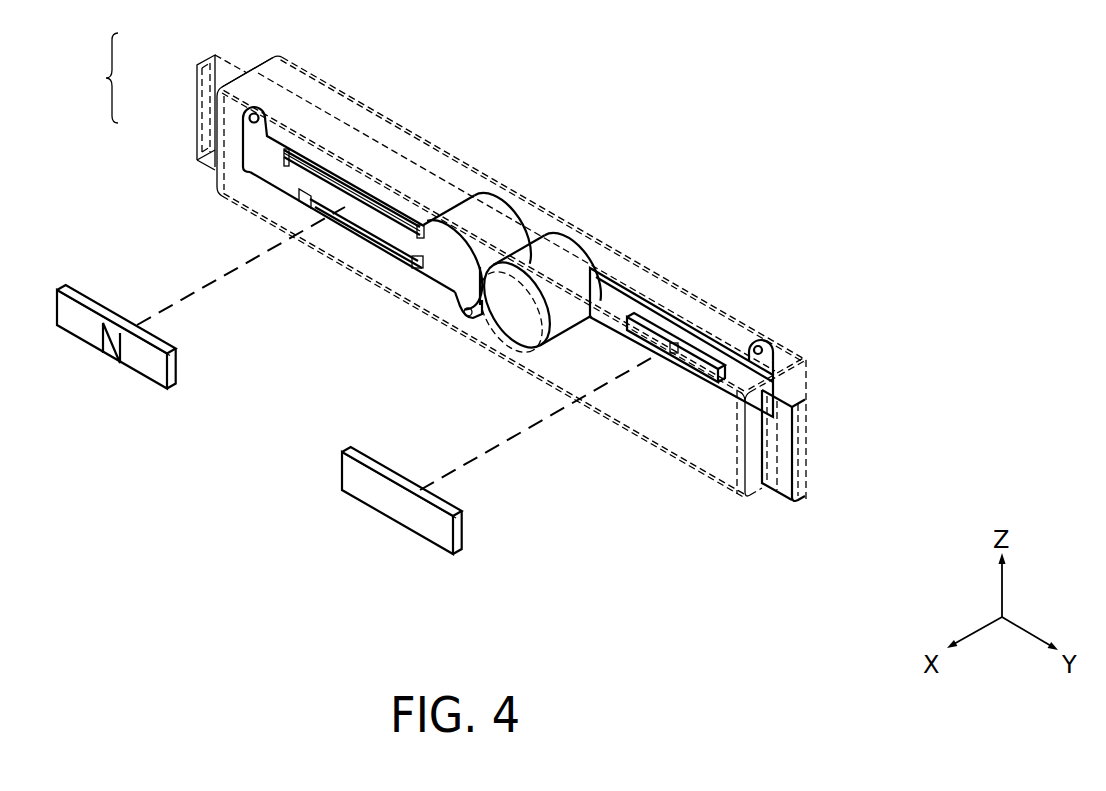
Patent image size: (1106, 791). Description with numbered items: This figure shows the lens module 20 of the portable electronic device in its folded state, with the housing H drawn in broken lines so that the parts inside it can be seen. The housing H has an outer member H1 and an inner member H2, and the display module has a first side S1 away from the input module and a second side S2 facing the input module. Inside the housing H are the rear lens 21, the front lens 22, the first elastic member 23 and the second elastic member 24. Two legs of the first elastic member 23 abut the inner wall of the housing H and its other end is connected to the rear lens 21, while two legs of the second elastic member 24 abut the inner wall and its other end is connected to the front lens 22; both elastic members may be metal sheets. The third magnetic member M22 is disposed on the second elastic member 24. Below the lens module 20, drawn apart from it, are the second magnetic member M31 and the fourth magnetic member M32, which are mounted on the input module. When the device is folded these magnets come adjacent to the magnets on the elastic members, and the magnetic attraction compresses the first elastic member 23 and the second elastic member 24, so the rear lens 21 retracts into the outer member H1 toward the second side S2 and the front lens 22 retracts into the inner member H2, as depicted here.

The lens module 20 is at (793, 312).
The first side S1 is at (333, 60).
The second side S2 is at (232, 218).
The housing H is at (101, 78).
The outer member H1 is at (275, 66).
The inner member H2 is at (230, 117).
The rear lens 21 is at (498, 207).
The front lens 22 is at (563, 243).
The first elastic member 23 is at (258, 161).
The second elastic member 24 is at (727, 363).
The third magnetic member M22 is at (675, 347).
The second magnetic member M31 is at (92, 333).
The fourth magnetic member M32 is at (377, 497).